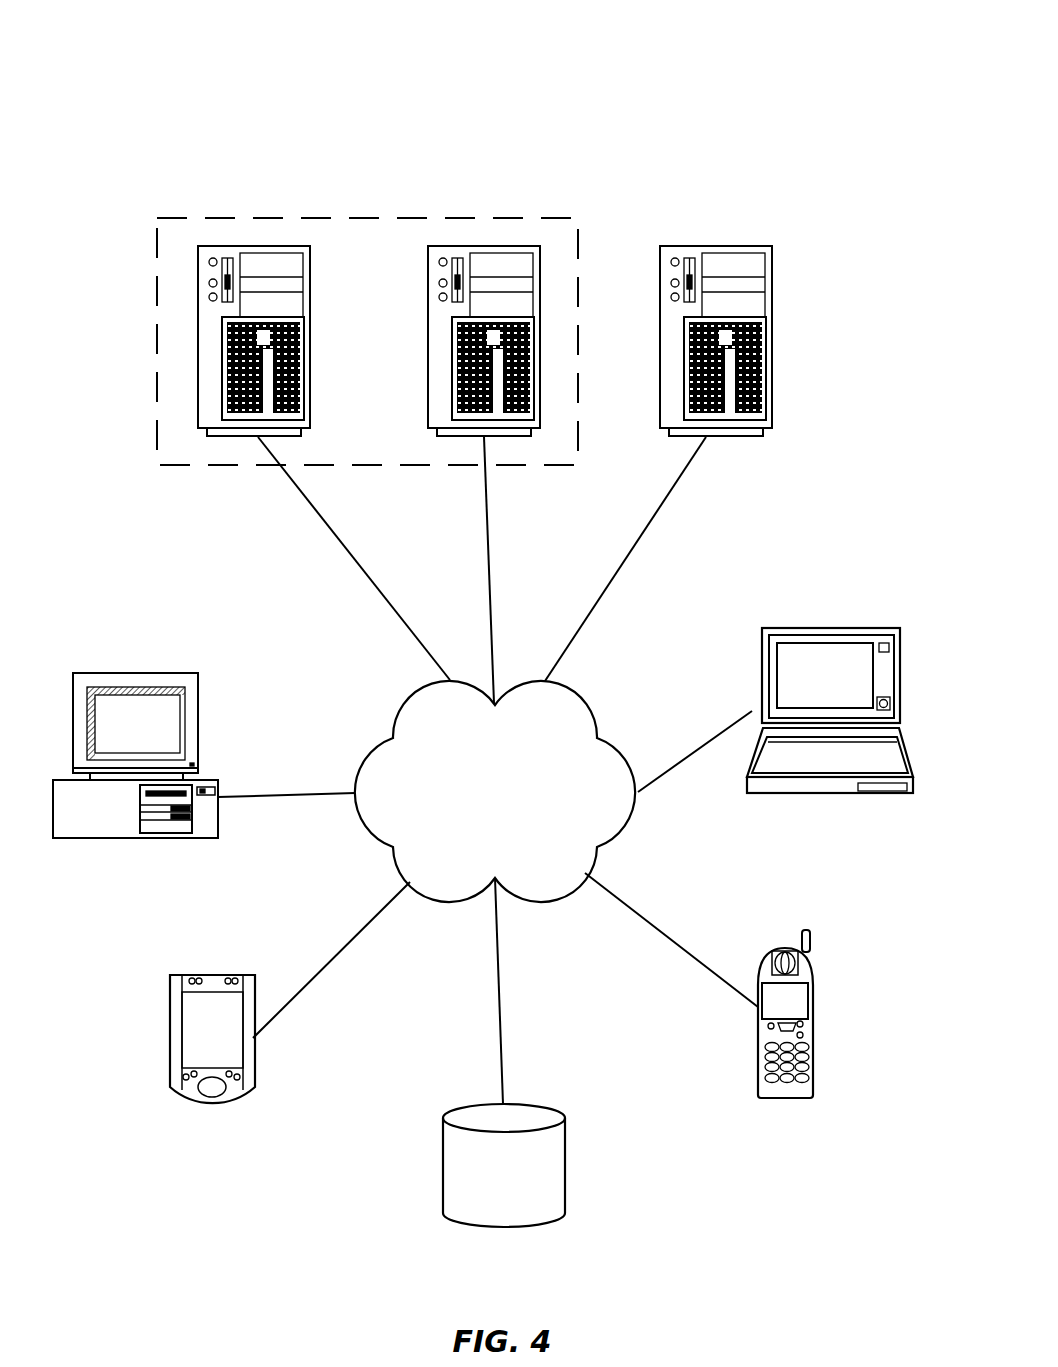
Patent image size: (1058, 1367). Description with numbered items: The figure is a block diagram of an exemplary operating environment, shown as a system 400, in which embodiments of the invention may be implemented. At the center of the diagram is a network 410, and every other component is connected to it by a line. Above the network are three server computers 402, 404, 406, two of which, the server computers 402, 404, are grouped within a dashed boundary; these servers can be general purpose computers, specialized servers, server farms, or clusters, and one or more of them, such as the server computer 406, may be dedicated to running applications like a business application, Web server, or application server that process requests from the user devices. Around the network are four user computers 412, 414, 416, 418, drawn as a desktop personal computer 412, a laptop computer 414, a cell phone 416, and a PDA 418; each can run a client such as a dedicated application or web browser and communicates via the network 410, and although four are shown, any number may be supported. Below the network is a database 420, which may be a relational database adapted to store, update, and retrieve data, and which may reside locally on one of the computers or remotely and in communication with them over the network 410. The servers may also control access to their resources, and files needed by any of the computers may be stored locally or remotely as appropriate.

The system 400 is at (880, 122).
The server computer 402 is at (232, 245).
The server computer 404 is at (480, 245).
The server computer 406 is at (773, 337).
The network 410 is at (488, 770).
The user computer 412 is at (133, 673).
The user computer 414 is at (828, 628).
The user computer 416 is at (785, 1097).
The user computer 418 is at (212, 1103).
The database 420 is at (504, 1165).